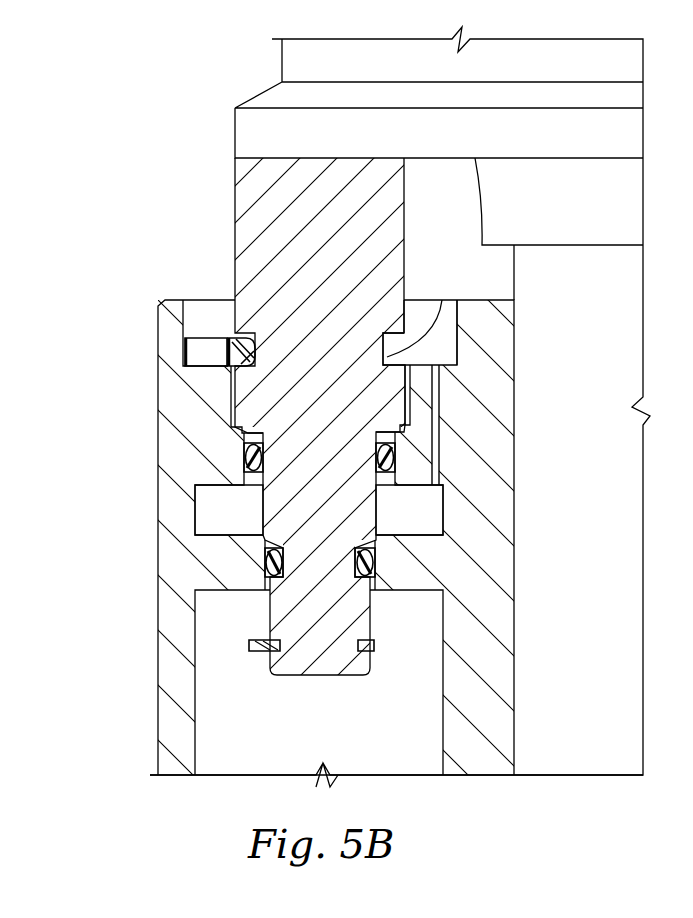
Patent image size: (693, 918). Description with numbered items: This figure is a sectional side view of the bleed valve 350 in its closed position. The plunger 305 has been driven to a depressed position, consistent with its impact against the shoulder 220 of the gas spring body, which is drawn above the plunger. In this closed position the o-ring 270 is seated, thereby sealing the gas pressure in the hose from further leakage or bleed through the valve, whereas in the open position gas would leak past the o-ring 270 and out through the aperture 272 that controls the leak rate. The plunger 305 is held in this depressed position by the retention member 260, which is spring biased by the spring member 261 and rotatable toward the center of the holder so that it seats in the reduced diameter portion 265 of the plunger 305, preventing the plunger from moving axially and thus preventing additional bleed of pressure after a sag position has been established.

The shoulder 220 is at (550, 158).
The plunger 305 is at (234, 188).
The retention member 260 is at (230, 345).
The spring member 261 is at (196, 347).
The reduced diameter portion 265 is at (442, 300).
The o-ring 270 is at (268, 565).
The aperture 272 is at (437, 445).
The bleed valve 350 is at (158, 658).